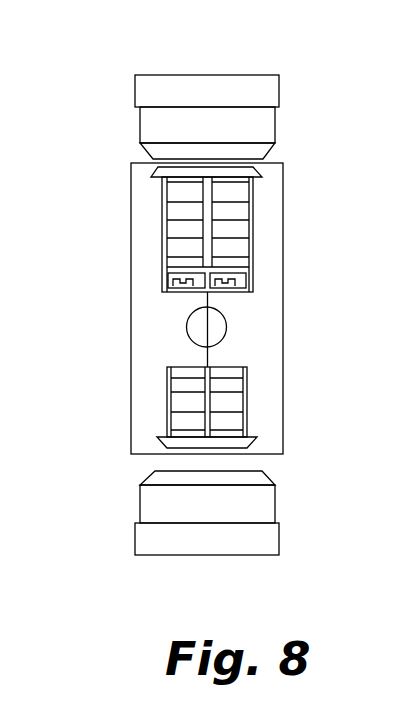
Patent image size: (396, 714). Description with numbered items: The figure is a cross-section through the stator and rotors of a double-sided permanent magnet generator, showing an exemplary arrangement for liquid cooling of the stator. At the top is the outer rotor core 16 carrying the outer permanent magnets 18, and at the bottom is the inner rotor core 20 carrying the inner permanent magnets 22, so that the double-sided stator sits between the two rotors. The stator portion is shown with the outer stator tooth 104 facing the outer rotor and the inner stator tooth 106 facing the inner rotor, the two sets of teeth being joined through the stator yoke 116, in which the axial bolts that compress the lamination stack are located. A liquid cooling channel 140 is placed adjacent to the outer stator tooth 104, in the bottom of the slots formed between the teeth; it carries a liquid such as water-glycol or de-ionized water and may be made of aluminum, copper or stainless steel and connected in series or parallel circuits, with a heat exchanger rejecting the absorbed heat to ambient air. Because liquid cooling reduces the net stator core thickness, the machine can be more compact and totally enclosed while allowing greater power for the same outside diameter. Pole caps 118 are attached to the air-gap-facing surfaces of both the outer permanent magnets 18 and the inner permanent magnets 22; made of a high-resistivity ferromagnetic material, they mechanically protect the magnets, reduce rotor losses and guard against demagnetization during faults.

The outer rotor core 16 is at (265, 93).
The outer permanent magnets 18 is at (270, 127).
The pole caps 118 is at (265, 146).
The outer stator tooth 104 is at (270, 220).
The liquid cooling channel 140 is at (242, 282).
The stator yoke 116 is at (226, 325).
The inner stator tooth 106 is at (267, 395).
The inner permanent magnets 22 is at (270, 510).
The inner rotor core 20 is at (270, 545).